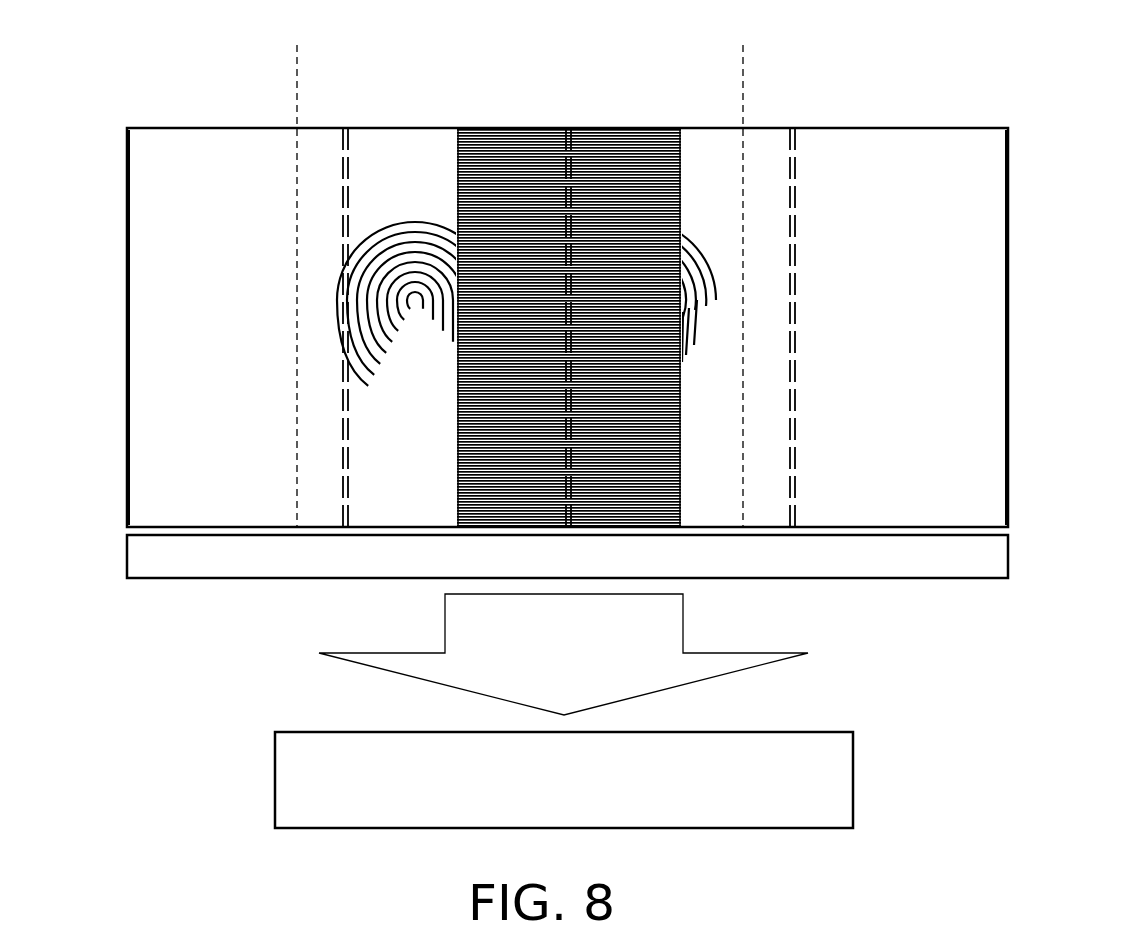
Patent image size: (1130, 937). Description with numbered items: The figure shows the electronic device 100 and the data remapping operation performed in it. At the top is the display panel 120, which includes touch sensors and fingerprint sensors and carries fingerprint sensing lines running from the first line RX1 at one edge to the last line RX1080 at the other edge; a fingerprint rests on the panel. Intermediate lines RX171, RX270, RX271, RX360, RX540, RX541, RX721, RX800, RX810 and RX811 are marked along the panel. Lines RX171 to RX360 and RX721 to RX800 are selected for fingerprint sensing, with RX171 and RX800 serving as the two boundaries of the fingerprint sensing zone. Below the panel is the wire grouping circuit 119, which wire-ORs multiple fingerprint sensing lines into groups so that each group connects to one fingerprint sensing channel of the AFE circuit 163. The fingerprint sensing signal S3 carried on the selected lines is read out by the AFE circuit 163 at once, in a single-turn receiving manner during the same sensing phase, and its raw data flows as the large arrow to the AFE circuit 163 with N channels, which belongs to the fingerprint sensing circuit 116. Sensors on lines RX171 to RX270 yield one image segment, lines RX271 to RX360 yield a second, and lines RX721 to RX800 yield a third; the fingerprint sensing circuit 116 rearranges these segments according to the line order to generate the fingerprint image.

The electronic device 100 is at (1053, 829).
The display panel 120 is at (1009, 330).
The wire grouping circuit 119 is at (1009, 558).
The AFE circuit 163 is at (615, 785).
The fingerprint sensing circuit 116 is at (854, 782).
The fingerprint sensing signal S3 is at (683, 622).
The fingerprint sensing line RX1 is at (121, 308).
The fingerprint sensing line RX171 is at (303, 268).
The fingerprint sensing line RX270 is at (343, 158).
The fingerprint sensing line RX271 is at (348, 156).
The fingerprint sensing line RX360 is at (457, 162).
The fingerprint sensing line RX540 is at (566, 163).
The fingerprint sensing line RX541 is at (571, 163).
The fingerprint sensing line RX721 is at (681, 165).
The fingerprint sensing line RX800 is at (743, 268).
The fingerprint sensing line RX810 is at (790, 158).
The fingerprint sensing line RX811 is at (795, 156).
The fingerprint sensing line RX1080 is at (1006, 308).